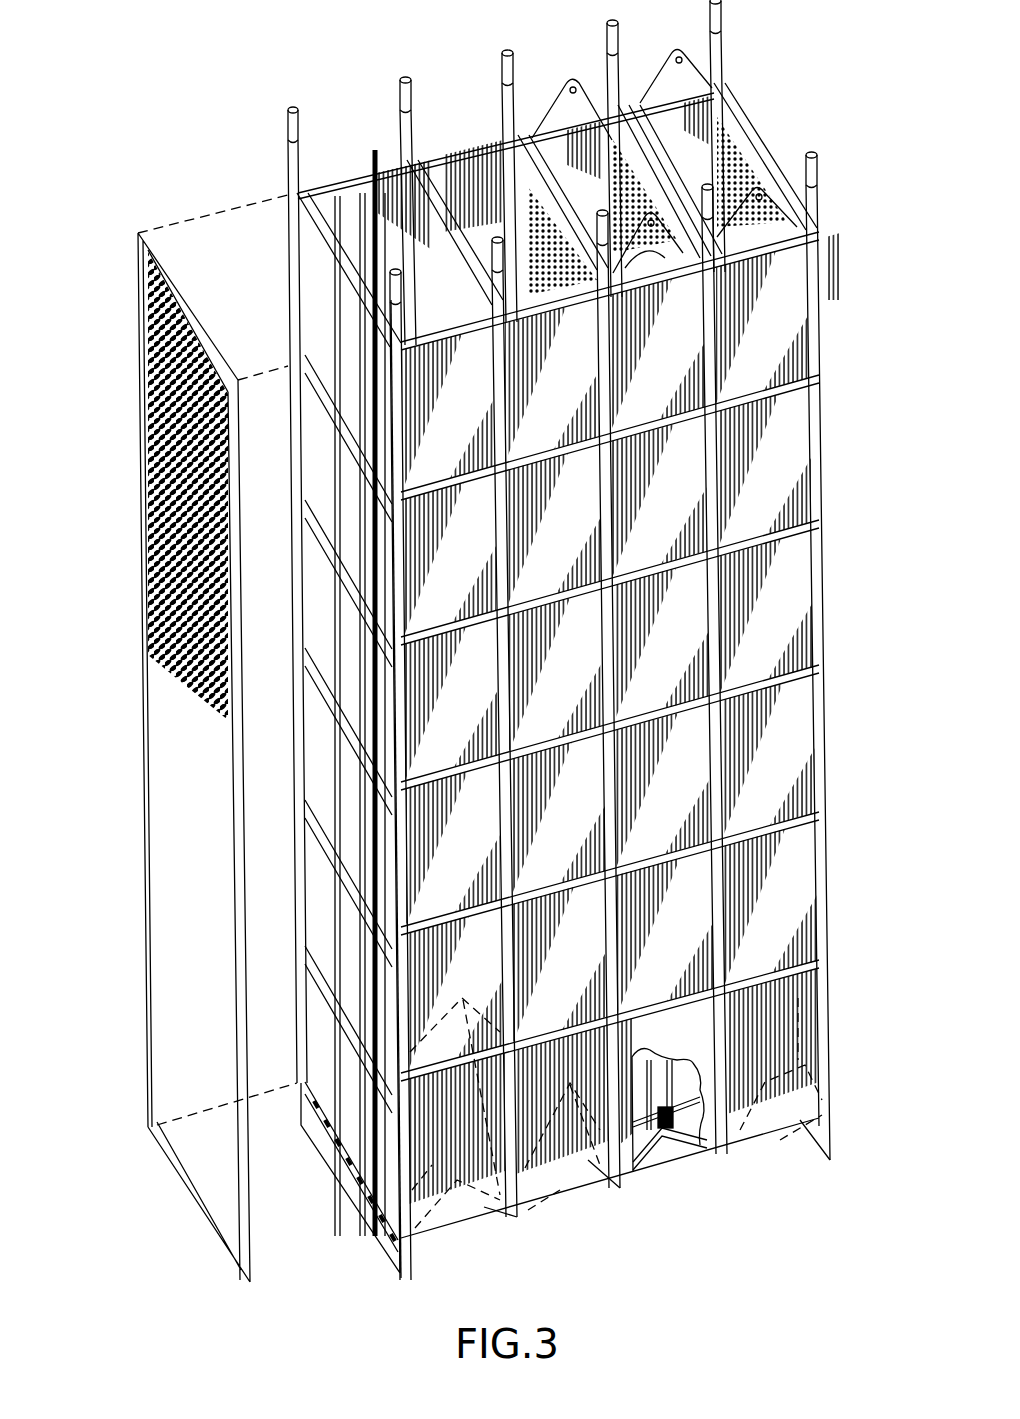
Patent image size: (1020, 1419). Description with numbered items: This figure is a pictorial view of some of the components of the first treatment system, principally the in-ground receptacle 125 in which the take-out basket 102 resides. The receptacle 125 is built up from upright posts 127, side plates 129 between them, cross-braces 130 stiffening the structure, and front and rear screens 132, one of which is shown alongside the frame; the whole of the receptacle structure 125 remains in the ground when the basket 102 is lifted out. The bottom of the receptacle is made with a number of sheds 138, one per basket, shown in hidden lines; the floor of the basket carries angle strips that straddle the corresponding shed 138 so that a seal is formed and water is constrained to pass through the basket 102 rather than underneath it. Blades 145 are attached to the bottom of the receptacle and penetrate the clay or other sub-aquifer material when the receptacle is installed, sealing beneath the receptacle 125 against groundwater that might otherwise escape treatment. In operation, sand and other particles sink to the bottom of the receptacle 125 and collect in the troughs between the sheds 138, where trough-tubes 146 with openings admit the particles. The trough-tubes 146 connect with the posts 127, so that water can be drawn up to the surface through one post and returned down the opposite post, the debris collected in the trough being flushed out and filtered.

The take-out basket 102 is at (676, 262).
The receptacle 125 is at (794, 623).
The posts 127 is at (400, 688).
The side plates 129 is at (790, 772).
The cross-braces 130 is at (328, 828).
The front and rear screens 132 is at (150, 352).
The sheds 138 is at (457, 1042).
The blades 145 is at (593, 1203).
The trough-tubes 146 is at (352, 1163).